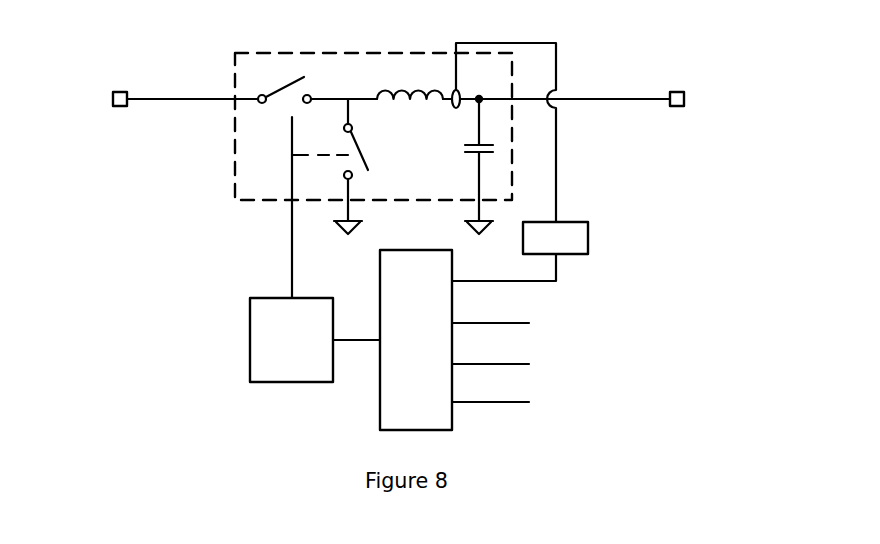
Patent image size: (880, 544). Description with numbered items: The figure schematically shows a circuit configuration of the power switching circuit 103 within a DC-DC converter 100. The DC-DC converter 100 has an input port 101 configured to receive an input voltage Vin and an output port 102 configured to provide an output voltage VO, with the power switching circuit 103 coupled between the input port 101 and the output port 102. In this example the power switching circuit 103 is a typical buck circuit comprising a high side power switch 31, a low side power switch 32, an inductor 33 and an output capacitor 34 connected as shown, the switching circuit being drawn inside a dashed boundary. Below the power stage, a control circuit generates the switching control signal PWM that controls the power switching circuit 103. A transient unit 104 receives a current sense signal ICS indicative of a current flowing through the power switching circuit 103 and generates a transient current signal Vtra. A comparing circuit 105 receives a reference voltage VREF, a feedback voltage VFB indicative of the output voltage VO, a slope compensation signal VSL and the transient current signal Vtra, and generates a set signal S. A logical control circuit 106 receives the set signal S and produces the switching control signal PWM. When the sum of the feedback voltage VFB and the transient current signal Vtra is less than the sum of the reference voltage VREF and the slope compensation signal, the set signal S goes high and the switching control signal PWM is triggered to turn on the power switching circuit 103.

The DC-DC converter 100 is at (122, 46).
The input port 101 is at (124, 108).
The output port 102 is at (690, 130).
The power switching circuit 103 is at (286, 187).
The high side power switch 31 is at (284, 80).
The low side power switch 32 is at (366, 166).
The inductor 33 is at (410, 112).
The output capacitor 34 is at (468, 165).
The transient unit 104 is at (521, 148).
The comparing circuit 105 is at (466, 340).
The logical control circuit 106 is at (301, 325).